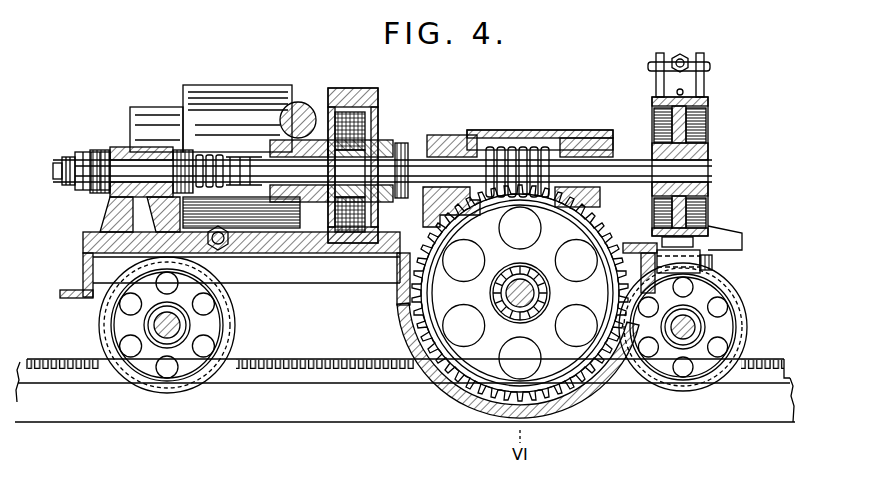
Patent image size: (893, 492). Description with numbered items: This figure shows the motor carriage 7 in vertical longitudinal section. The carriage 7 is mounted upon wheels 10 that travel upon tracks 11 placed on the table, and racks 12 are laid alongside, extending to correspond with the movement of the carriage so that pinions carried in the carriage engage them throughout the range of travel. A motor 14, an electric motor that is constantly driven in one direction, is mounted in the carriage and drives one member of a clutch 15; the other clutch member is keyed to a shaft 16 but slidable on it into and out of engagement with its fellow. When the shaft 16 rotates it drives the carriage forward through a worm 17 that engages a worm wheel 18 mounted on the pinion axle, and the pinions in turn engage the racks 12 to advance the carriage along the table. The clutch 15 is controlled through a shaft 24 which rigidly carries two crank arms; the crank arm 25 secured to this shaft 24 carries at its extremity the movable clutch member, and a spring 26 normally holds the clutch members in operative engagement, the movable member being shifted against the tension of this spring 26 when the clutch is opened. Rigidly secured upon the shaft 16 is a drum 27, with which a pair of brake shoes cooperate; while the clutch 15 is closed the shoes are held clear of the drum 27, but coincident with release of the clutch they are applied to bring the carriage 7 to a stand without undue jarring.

The carriage 7 is at (744, 236).
The wheels 10 is at (99, 325).
The tracks 11 is at (150, 410).
The racks 12 is at (308, 360).
The motor 14 is at (202, 88).
The clutch 15 is at (380, 107).
The shaft 16 is at (417, 157).
The worm 17 is at (528, 147).
The worm wheel 18 is at (463, 395).
The shaft 24 is at (305, 116).
The crank arm 25 is at (342, 92).
The spring 26 is at (240, 153).
The drum 27 is at (708, 123).